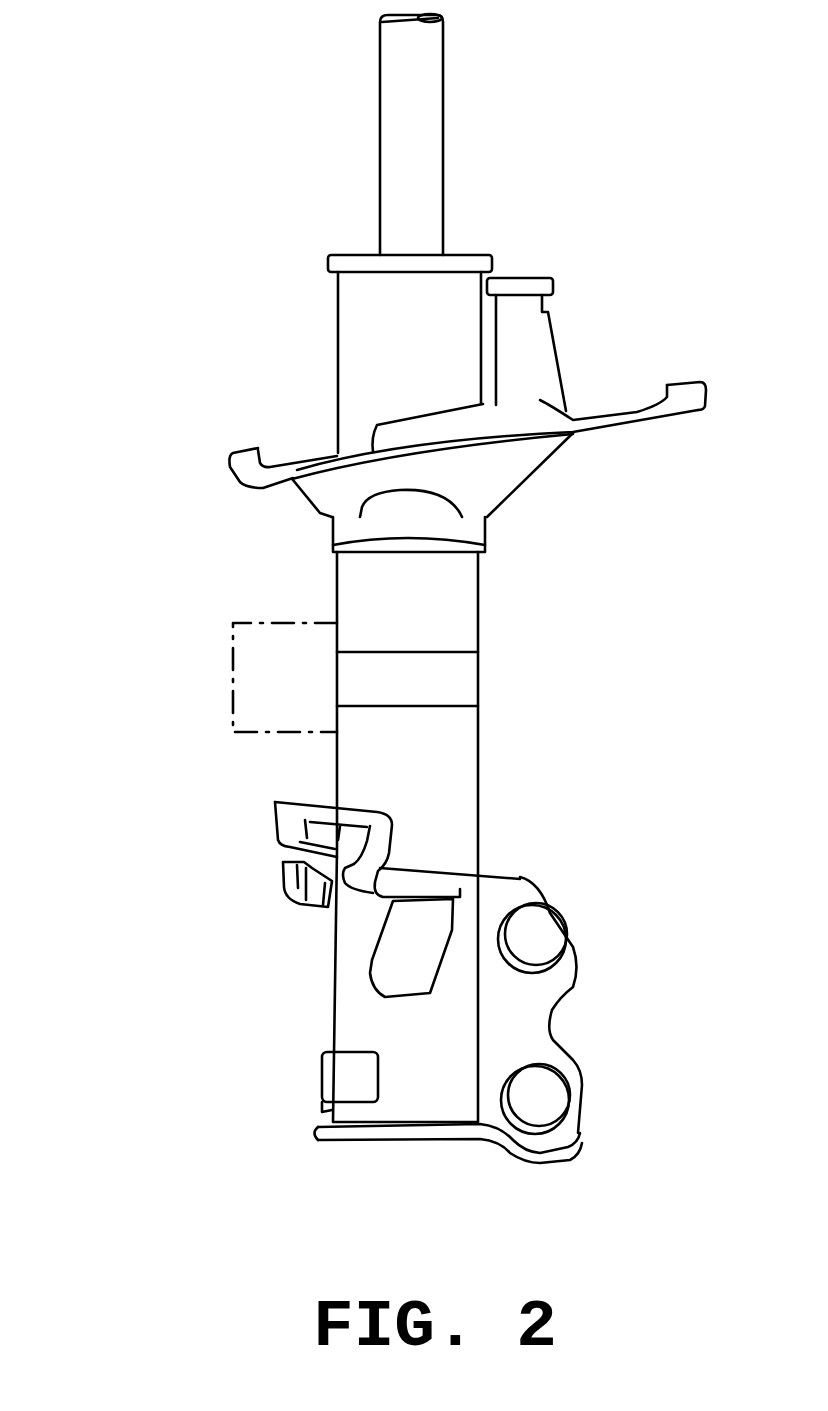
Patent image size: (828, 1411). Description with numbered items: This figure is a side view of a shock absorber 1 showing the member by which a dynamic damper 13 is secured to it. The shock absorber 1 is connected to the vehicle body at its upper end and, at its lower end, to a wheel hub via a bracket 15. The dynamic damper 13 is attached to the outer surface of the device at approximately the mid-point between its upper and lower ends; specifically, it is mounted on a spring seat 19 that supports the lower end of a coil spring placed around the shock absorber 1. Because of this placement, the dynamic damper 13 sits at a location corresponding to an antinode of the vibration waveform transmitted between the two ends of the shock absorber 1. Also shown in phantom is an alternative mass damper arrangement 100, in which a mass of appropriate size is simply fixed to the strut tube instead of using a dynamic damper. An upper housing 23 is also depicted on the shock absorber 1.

The shock absorber 1 is at (322, 148).
The upper housing / dust cover 23 is at (443, 255).
The dynamic damper 13 is at (566, 282).
The spring seat 19 is at (541, 466).
The bracket 15 is at (500, 882).
The mass damper arrangement 100 is at (232, 692).